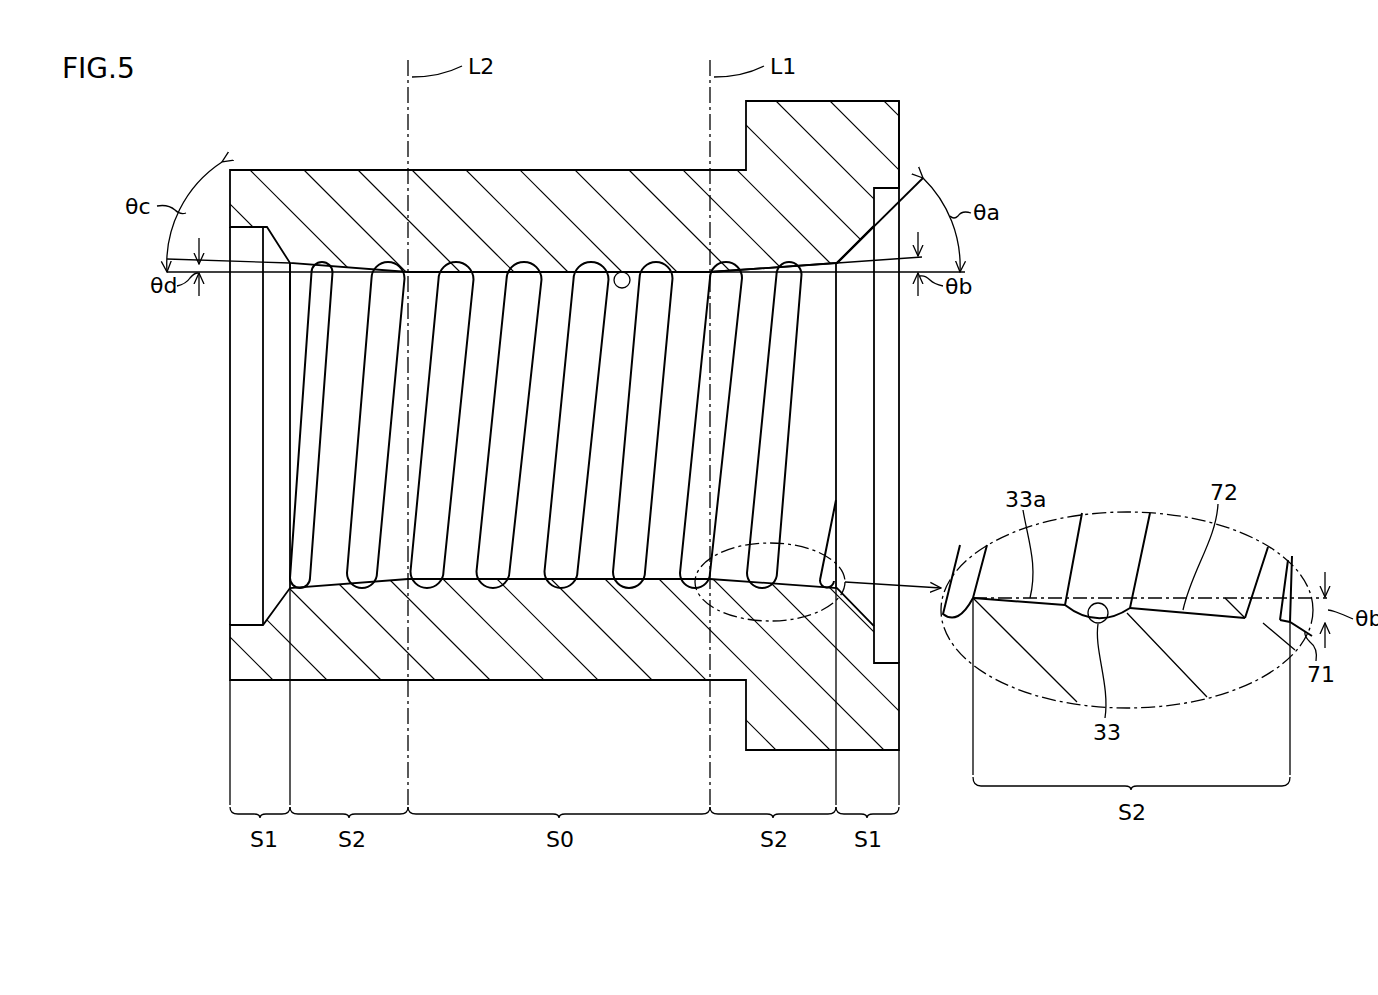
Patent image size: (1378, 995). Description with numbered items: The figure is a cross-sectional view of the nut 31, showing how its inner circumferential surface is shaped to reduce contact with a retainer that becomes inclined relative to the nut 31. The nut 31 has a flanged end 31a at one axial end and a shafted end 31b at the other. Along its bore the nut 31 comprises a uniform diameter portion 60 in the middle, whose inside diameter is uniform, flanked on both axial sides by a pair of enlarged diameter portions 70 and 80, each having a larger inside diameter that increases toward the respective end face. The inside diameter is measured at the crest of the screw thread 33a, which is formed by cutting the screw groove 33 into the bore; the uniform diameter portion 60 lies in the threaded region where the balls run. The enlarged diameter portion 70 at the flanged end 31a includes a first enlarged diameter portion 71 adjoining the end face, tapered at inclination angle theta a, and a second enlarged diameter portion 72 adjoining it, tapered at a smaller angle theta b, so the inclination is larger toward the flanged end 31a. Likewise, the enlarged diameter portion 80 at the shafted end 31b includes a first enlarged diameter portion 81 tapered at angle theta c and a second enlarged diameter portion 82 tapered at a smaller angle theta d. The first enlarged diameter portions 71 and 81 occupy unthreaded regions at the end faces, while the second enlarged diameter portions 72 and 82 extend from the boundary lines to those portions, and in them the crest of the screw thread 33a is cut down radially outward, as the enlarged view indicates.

The nut 31 is at (286, 170).
The flanged end 31a is at (888, 122).
The shafted end 31b is at (243, 662).
The screw groove 33 is at (667, 263).
The screw thread 33a is at (627, 273).
The uniform diameter portion 60 is at (550, 317).
The enlarged diameter portion 70 is at (846, 329).
The first enlarged diameter portion 71 is at (853, 247).
The second enlarged diameter portion 72 is at (768, 276).
The enlarged diameter portion 80 is at (301, 312).
The first enlarged diameter portion 81 is at (262, 245).
The second enlarged diameter portion 82 is at (351, 273).